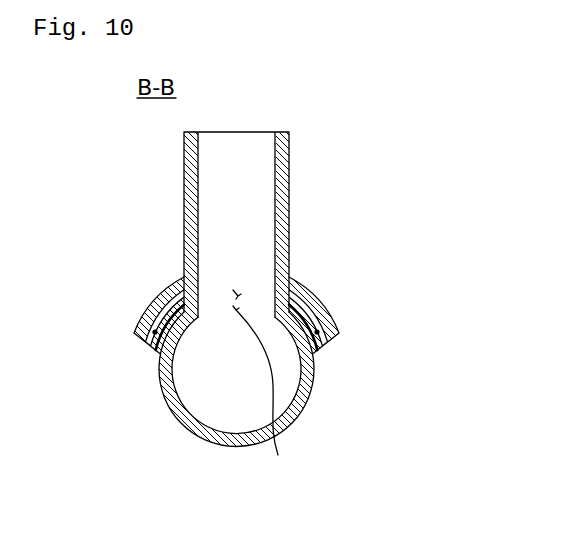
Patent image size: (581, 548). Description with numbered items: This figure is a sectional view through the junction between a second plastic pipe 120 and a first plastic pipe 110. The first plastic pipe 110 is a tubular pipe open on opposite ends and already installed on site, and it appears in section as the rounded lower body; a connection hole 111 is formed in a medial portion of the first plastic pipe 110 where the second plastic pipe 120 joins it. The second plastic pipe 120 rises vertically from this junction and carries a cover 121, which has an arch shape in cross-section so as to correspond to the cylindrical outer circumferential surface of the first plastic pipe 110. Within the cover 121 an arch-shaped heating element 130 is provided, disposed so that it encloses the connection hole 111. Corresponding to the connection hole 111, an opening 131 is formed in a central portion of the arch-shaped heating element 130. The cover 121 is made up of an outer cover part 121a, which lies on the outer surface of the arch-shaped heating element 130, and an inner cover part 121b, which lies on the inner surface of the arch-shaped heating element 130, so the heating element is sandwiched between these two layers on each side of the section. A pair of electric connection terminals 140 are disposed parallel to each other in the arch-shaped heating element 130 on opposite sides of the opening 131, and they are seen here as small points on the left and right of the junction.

The first plastic pipe 110 is at (240, 447).
The connection hole 111 is at (278, 455).
The second plastic pipe 120 is at (286, 203).
The cover 121 is at (317, 309).
The outer cover part 121a is at (311, 294).
The inner cover part 121b is at (319, 318).
The arch-shaped heating element 130 is at (160, 308).
The opening 131 is at (233, 290).
The electric connection terminals 140 is at (154, 332).